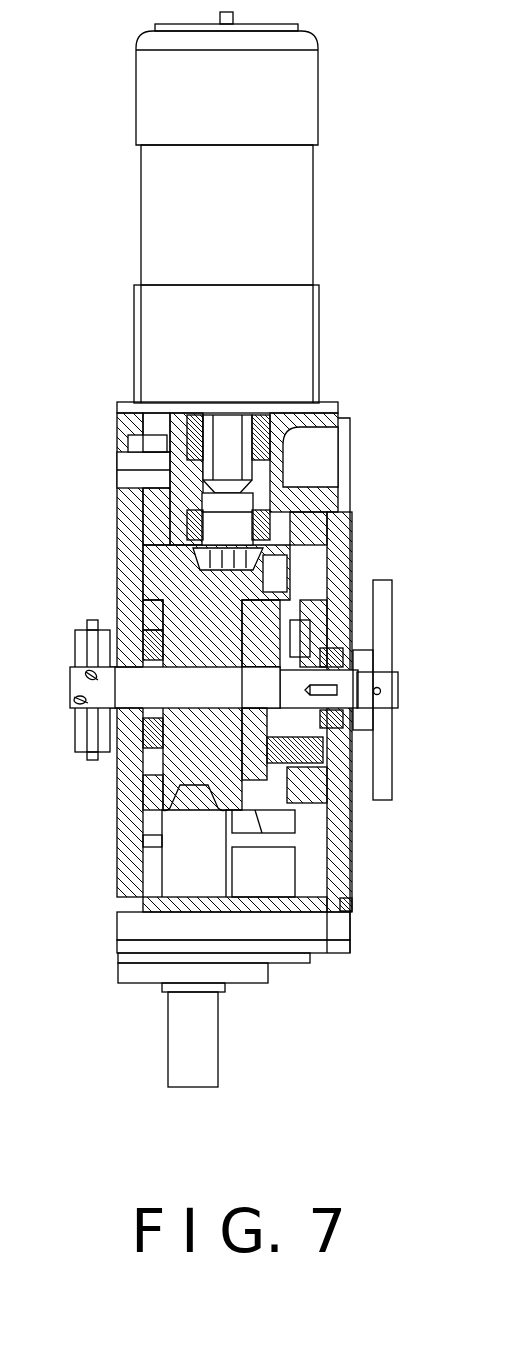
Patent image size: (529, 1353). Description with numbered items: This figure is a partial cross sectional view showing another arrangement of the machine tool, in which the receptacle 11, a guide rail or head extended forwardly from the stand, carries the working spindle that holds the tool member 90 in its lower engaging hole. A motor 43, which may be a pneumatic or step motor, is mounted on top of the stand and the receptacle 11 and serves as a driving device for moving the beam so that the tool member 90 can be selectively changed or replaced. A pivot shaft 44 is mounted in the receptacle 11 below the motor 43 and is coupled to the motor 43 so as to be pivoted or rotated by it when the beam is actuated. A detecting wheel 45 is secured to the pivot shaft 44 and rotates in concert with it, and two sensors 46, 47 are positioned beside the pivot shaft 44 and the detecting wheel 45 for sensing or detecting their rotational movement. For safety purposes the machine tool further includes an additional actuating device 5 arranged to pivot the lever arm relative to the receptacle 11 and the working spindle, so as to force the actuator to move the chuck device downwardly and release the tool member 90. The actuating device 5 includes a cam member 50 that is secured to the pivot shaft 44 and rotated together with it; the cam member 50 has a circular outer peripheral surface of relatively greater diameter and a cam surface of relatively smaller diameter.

The motor 43 is at (273, 190).
The receptacle 11 is at (120, 532).
The pivot shaft 44 is at (262, 670).
The actuating device 5 is at (397, 605).
The cam member 50 is at (392, 760).
The sensor 47 is at (88, 675).
The sensor 46 is at (77, 706).
The detecting wheel 45 is at (92, 762).
The tool member 90 is at (203, 1050).